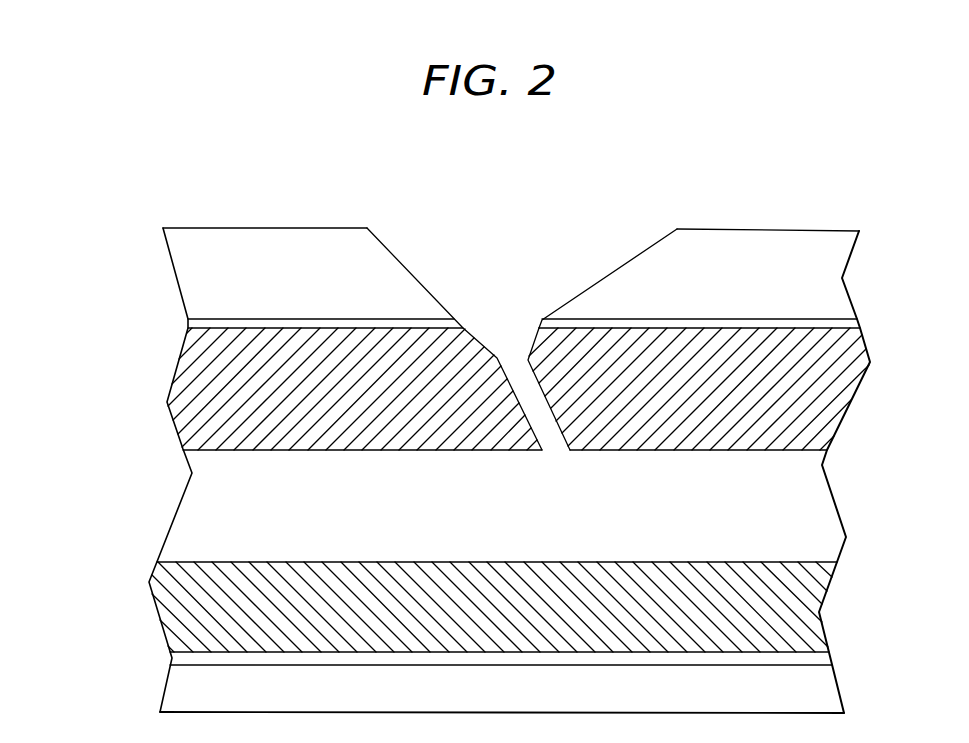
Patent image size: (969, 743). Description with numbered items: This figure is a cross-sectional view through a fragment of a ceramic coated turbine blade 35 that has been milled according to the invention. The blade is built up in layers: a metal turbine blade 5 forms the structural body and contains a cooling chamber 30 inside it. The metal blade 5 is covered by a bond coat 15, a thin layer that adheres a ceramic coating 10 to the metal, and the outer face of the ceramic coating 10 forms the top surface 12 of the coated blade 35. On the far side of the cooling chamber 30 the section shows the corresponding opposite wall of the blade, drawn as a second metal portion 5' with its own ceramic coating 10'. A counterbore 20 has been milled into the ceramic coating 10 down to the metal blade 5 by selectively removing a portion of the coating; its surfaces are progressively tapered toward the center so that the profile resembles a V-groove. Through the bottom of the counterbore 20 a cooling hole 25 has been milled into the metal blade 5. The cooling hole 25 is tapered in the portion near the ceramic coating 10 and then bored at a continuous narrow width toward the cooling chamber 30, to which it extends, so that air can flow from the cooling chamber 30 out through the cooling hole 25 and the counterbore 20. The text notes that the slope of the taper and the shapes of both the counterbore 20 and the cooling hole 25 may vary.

The ceramic coated turbine blade 35 is at (122, 130).
The top surface 12 is at (272, 227).
The ceramic coating 10 is at (490, 274).
The bond coat 15 is at (190, 323).
The counterbore 20 is at (537, 254).
The cooling hole 25 is at (528, 397).
The metal turbine blade 5 is at (495, 389).
The cooling chamber 30 is at (830, 518).
The lower insulating layer 5' is at (514, 607).
The lower semiconductor layer 10' is at (531, 688).